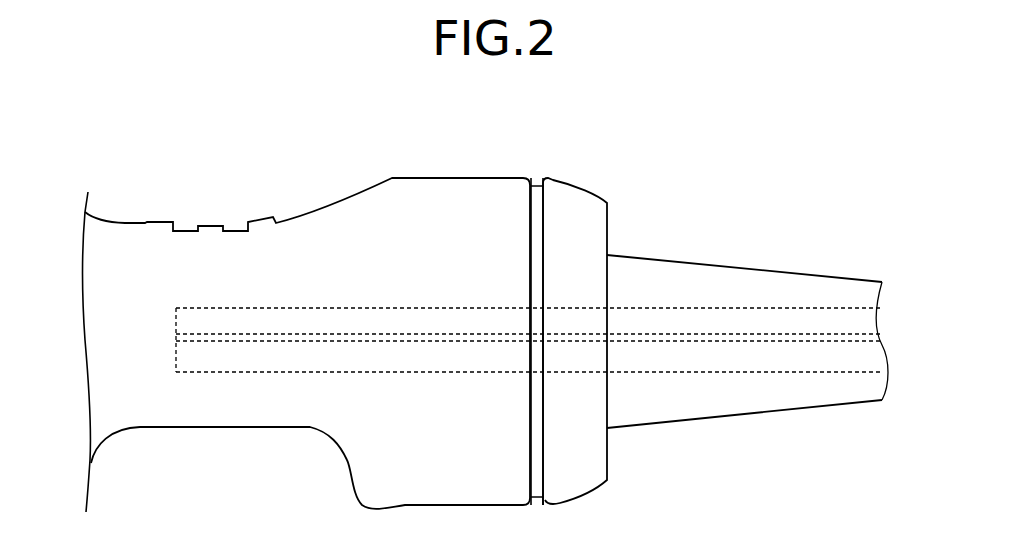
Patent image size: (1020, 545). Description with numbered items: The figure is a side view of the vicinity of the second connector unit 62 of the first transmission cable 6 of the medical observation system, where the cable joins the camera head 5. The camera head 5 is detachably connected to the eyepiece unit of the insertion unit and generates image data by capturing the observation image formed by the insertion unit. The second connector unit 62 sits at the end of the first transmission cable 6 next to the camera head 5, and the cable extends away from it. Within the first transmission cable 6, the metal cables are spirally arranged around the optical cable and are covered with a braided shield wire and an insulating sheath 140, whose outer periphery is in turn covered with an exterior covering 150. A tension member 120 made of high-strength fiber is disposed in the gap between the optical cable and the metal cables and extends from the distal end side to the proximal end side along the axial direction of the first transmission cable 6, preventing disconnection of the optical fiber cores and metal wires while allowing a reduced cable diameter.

The camera head 5 is at (450, 203).
The second connector unit 62 is at (580, 203).
The first transmission cable 6 is at (680, 258).
The tension member 120 is at (738, 333).
The sheath 140 is at (800, 307).
The exterior covering 150 is at (864, 278).